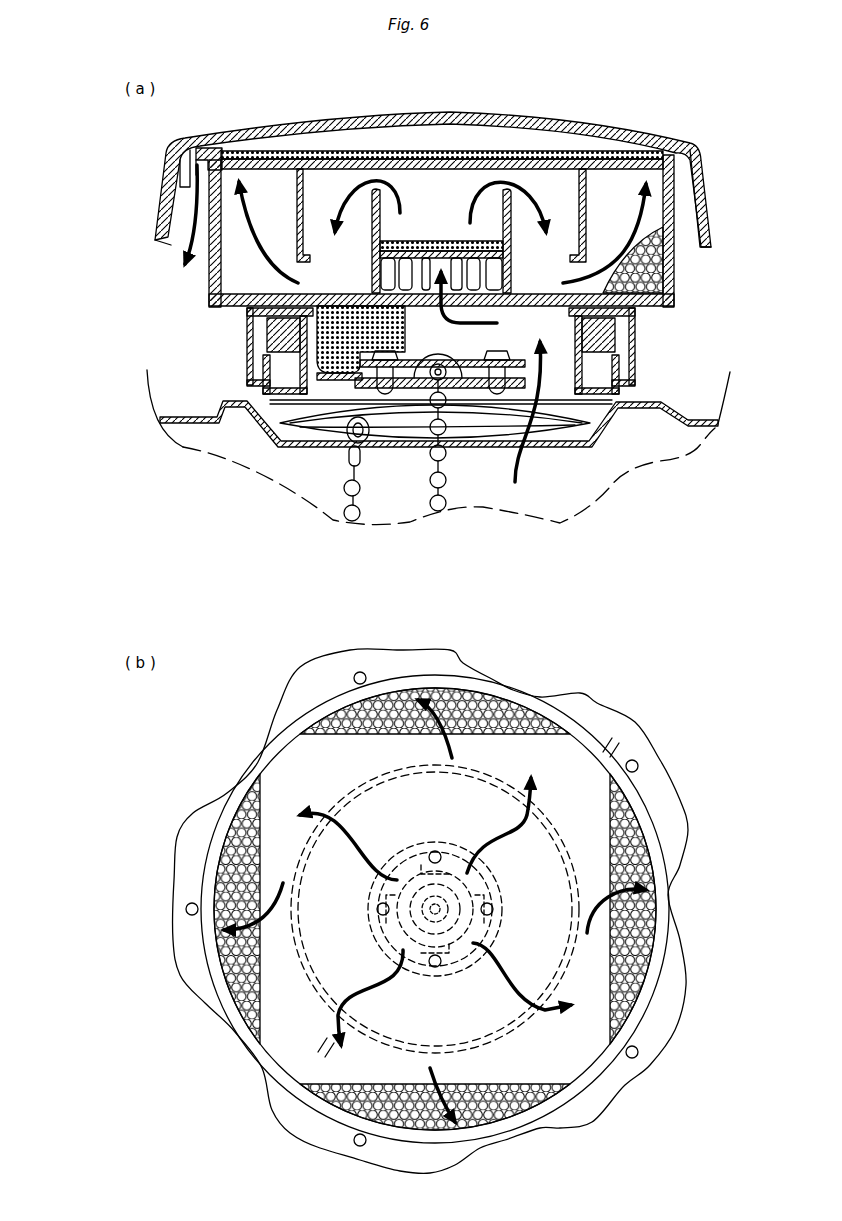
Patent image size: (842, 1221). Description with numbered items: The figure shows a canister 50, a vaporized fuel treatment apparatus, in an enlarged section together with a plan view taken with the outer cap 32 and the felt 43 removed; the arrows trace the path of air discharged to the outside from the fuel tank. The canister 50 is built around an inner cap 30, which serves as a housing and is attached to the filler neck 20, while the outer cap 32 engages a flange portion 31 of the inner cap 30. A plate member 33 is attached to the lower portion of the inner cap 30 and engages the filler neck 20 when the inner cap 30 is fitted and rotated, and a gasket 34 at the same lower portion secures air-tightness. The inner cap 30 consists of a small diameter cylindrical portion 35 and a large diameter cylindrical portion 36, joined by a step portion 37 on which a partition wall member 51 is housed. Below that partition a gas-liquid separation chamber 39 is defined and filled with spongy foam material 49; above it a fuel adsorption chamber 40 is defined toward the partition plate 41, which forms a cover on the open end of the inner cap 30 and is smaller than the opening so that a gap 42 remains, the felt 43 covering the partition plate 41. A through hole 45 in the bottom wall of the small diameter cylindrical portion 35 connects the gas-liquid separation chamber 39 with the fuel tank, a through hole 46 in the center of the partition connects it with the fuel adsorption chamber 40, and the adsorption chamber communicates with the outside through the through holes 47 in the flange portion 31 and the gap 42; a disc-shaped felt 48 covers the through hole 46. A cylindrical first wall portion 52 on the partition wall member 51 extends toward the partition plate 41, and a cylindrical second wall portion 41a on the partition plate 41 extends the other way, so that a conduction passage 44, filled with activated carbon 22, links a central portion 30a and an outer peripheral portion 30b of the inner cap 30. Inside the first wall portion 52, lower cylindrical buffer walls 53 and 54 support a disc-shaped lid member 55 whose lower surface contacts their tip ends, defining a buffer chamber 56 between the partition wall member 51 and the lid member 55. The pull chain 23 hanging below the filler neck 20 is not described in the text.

The filler neck 20 is at (530, 450).
The activated carbon 22 is at (643, 278).
The pull chain 23 is at (347, 490).
The inner cap 30 is at (680, 309).
The central portion 30a is at (443, 200).
The outer peripheral portion 30b is at (655, 213).
The flange portion 31 is at (203, 156).
The outer cap 32 is at (600, 122).
The plate member 33 is at (465, 390).
The gasket 34 is at (633, 333).
The small diameter cylindrical portion 35 is at (270, 340).
The large diameter cylindrical portion 36 is at (214, 273).
The step portion 37 is at (247, 313).
The gas-liquid separation chamber 39 is at (521, 331).
The fuel adsorption chamber 40 is at (336, 196).
The partition plate 41 is at (360, 160).
The second wall portion 41a is at (296, 212).
The gap 42 is at (250, 162).
The felt 43 is at (410, 153).
The conduction passage 44 is at (553, 185).
The through hole 45 is at (565, 375).
The through hole 46 is at (440, 306).
The through holes 47 is at (188, 178).
The felt 48 is at (488, 250).
The foam material 49 is at (343, 323).
The canister 50 is at (698, 132).
The partition wall member 51 is at (547, 292).
The first wall portion 52 is at (370, 216).
The buffer wall 53 is at (436, 260).
The buffer wall 54 is at (398, 252).
The lid member 55 is at (458, 240).
The buffer chamber 56 is at (507, 275).